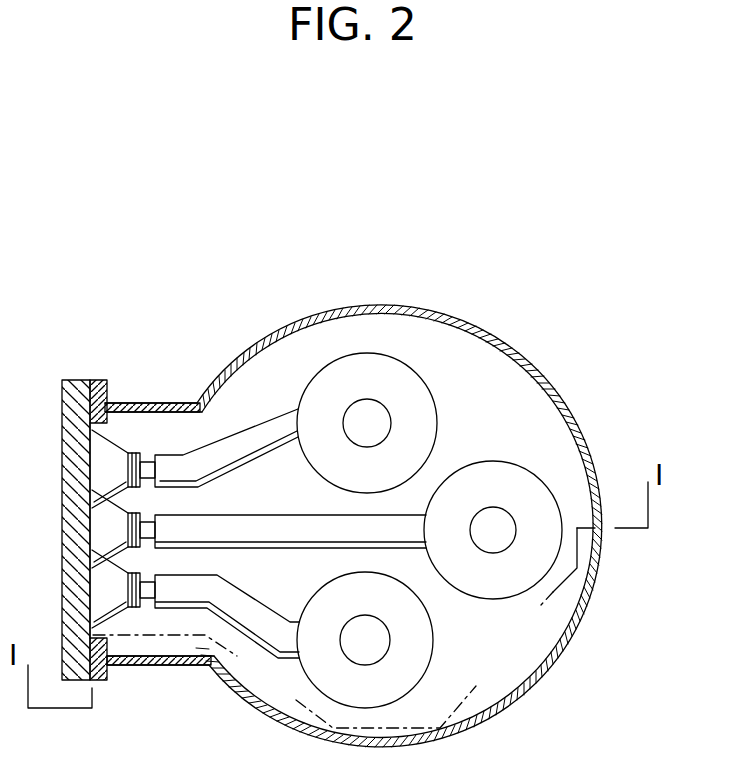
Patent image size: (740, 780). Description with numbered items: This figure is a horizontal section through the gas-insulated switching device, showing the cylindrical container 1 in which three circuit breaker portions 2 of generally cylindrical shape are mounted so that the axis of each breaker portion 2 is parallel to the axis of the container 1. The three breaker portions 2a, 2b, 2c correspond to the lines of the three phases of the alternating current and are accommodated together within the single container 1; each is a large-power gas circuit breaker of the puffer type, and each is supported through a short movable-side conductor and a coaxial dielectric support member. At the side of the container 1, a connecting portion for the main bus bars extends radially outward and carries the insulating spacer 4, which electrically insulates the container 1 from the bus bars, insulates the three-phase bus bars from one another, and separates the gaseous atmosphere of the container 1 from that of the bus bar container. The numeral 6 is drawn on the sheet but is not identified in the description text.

The cylindrical container 1 is at (533, 367).
The circuit breaker portion 2 is at (448, 484).
The circuit breaker portion 2a is at (420, 673).
The circuit breaker portion 2b is at (493, 480).
The circuit breaker portion 2c is at (407, 390).
The insulating spacer 4 is at (77, 380).
The feed pipe 6 is at (270, 420).